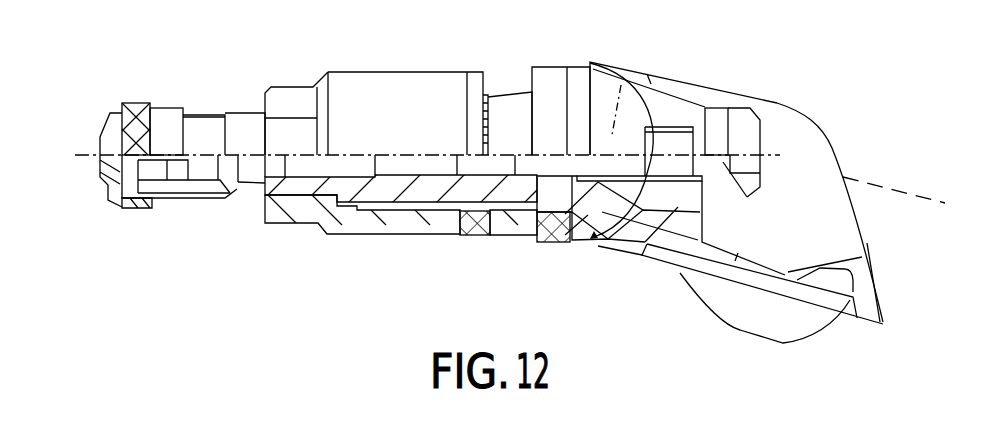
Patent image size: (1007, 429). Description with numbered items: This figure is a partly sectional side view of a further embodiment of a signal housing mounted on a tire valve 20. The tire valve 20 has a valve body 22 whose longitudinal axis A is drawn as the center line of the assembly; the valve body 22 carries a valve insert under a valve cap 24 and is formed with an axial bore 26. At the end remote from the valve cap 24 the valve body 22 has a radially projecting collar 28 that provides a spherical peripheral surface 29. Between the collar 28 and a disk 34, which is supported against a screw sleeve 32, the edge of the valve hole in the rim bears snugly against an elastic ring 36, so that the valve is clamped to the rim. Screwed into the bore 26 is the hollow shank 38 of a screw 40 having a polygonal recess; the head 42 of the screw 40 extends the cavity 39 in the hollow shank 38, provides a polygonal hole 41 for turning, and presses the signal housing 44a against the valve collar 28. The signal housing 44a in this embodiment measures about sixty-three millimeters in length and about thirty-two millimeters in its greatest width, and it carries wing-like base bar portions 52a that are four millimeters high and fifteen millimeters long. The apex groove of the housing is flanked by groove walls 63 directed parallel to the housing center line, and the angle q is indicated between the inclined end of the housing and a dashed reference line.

The tire valve 20 is at (297, 66).
The valve cap 24 is at (161, 120).
The screw sleeve 32 is at (350, 88).
The longitudinal axis A is at (386, 153).
The axial bore 26 is at (353, 167).
The valve body 22 is at (418, 190).
The disk 34 is at (479, 232).
The elastic ring 36 is at (551, 230).
The collar 28 is at (592, 220).
The spherical peripheral surface 29 is at (621, 83).
The hollow shank 38 is at (677, 181).
The head 42 is at (712, 120).
The screw 40 is at (746, 102).
The polygonal hole 41 is at (752, 160).
The cavity 39 is at (713, 157).
The groove walls 63 is at (822, 222).
The angle q is at (921, 206).
The signal housing 44a is at (677, 285).
The base bar portions 52a is at (805, 336).